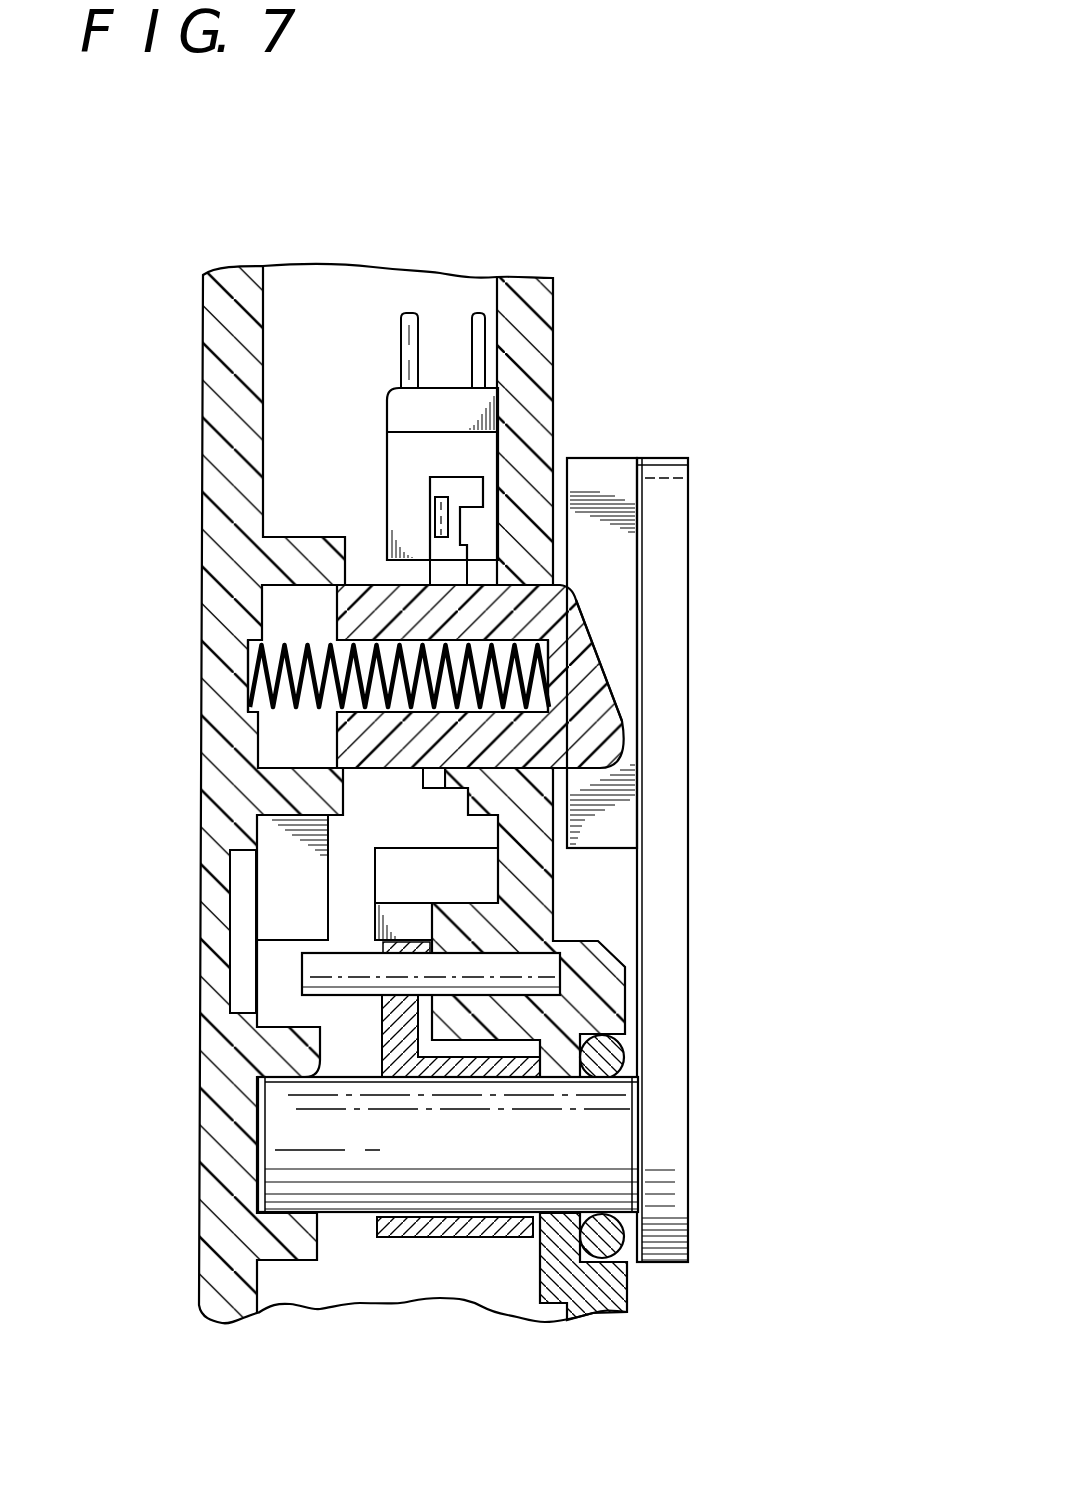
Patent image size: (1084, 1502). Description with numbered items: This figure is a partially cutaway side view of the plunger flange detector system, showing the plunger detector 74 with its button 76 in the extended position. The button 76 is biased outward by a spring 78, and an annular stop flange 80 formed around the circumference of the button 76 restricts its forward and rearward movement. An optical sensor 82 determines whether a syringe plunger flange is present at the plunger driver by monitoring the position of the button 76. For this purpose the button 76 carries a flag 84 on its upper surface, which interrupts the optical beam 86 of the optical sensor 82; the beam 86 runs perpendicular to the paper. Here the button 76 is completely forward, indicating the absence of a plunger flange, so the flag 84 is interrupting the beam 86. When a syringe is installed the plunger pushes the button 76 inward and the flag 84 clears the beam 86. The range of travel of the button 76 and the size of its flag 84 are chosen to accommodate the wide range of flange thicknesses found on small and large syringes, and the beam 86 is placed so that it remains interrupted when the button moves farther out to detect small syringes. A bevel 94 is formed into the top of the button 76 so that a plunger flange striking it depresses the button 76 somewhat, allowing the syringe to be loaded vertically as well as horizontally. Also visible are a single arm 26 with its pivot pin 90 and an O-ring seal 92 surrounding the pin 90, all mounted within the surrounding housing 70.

The housing 70 is at (553, 297).
The optical sensor 82 is at (390, 420).
The flag 84 is at (430, 443).
The optical beam 86 is at (435, 516).
The annular stop flange 80 is at (430, 592).
The spring 78 is at (325, 670).
The button 76 is at (578, 610).
The single arm 26 is at (657, 458).
The plunger detector 74 is at (620, 648).
The bevel 94 is at (614, 692).
The O-ring seal 92 is at (637, 1072).
The pivot pin 90 is at (450, 1157).